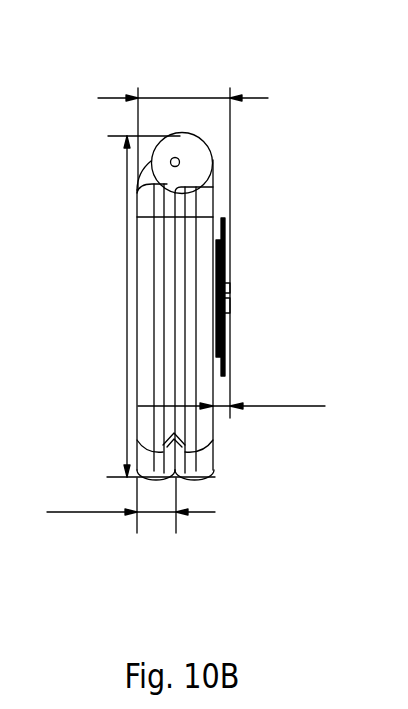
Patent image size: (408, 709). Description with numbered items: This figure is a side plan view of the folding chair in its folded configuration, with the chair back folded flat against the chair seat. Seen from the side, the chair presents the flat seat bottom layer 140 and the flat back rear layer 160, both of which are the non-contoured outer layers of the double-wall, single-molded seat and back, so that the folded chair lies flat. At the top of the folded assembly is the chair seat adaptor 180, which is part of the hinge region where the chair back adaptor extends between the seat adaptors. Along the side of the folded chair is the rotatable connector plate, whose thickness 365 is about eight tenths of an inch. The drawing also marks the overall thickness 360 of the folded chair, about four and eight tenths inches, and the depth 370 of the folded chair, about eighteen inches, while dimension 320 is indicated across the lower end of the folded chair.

The seat bottom layer 140 is at (240, 317).
The back rear layer 160 is at (124, 353).
The chair seat adaptor 180 is at (200, 158).
The bottom width dimension 320 is at (131, 514).
The thickness of the folded chair 360 is at (183, 239).
The thickness of the connector 365 is at (231, 388).
The depth of the folded chair 370 is at (152, 306).